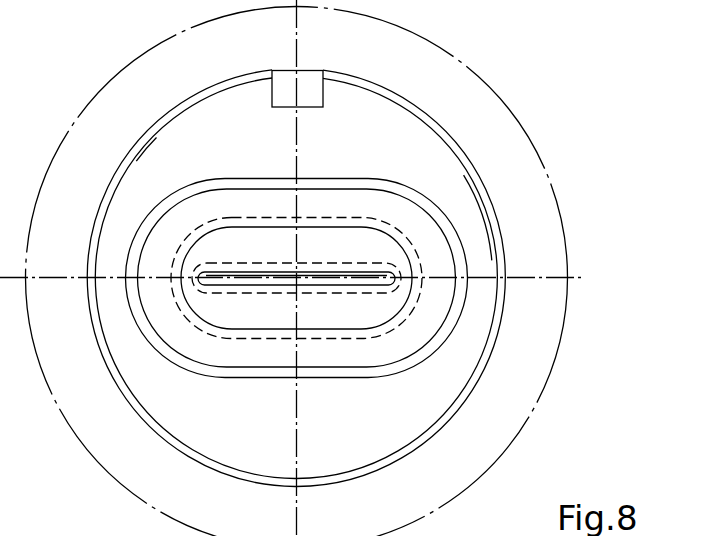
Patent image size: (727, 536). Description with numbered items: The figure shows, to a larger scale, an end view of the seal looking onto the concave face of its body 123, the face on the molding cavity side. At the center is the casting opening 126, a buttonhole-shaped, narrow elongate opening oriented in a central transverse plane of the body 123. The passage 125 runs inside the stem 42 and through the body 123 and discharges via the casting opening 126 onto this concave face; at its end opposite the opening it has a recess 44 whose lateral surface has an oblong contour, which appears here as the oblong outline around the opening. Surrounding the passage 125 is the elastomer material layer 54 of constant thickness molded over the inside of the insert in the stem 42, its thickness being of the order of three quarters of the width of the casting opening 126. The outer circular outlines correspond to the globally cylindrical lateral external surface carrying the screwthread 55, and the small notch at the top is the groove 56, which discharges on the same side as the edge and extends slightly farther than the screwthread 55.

The body 123 is at (543, 317).
The screwthread 55 is at (97, 248).
The stem 42 is at (370, 418).
The groove 56 is at (283, 78).
The elastomer material layer 54 is at (403, 188).
The recess 44 is at (433, 251).
The passage 125 is at (215, 312).
The casting opening 126 is at (250, 278).